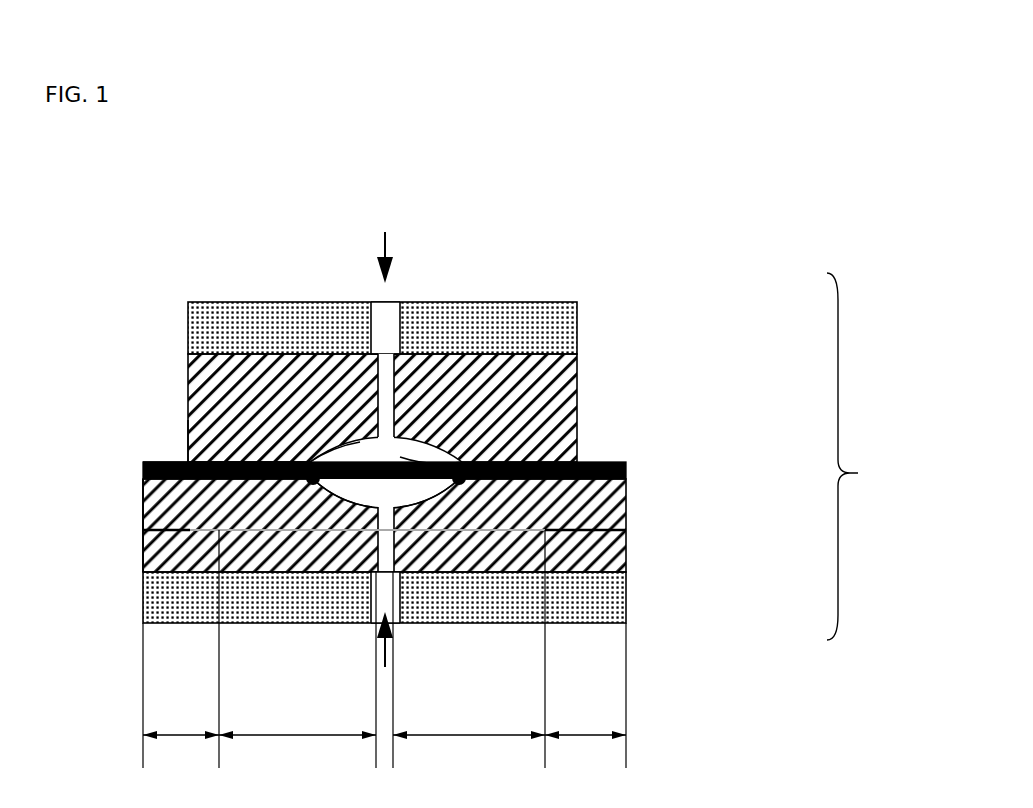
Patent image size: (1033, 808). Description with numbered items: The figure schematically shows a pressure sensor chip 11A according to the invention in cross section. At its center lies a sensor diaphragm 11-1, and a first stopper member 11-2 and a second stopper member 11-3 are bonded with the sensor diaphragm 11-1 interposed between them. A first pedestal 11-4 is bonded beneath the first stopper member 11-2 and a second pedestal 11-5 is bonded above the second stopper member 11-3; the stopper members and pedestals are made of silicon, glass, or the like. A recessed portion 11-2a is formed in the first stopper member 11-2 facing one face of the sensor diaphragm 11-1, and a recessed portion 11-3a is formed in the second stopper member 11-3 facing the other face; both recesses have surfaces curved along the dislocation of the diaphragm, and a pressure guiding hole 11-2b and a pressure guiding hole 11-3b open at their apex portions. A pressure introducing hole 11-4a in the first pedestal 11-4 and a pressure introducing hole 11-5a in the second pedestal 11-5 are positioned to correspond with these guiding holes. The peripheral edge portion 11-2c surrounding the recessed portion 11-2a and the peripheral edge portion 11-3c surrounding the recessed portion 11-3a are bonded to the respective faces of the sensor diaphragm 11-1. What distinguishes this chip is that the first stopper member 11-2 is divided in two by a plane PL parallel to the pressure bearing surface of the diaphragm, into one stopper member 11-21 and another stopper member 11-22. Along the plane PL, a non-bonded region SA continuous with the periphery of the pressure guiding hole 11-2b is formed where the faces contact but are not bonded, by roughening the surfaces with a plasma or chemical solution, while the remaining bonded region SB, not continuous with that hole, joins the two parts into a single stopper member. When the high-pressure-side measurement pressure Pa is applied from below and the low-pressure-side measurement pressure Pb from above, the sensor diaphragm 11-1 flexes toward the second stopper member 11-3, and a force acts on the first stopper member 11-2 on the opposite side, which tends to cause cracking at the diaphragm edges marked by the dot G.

The pressure sensor chip 11A is at (866, 456).
The sensor diaphragm 11-1 is at (626, 469).
The first stopper member 11-2 is at (626, 508).
The one stopper member 11-21 is at (200, 528).
The other stopper member 11-22 is at (143, 543).
The recessed portion 11-2a is at (412, 497).
The pressure guiding hole 11-2b is at (365, 508).
The peripheral edge portion 11-2c is at (220, 487).
The second stopper member 11-3 is at (577, 376).
The recessed portion 11-3a is at (410, 457).
The pressure guiding hole 11-3b is at (313, 462).
The peripheral edge portion 11-3c is at (243, 462).
The first pedestal 11-4 is at (626, 610).
The pressure introducing hole 11-4a is at (371, 600).
The second pedestal 11-5 is at (577, 316).
The pressure introducing hole 11-5a is at (383, 313).
The dot G is at (383, 420).
The plane PL is at (143, 462).
The measurement pressure Pa is at (401, 639).
The measurement pressure Pb is at (388, 240).
The non-bonded region SA is at (382, 649).
The bonded region SB is at (384, 695).